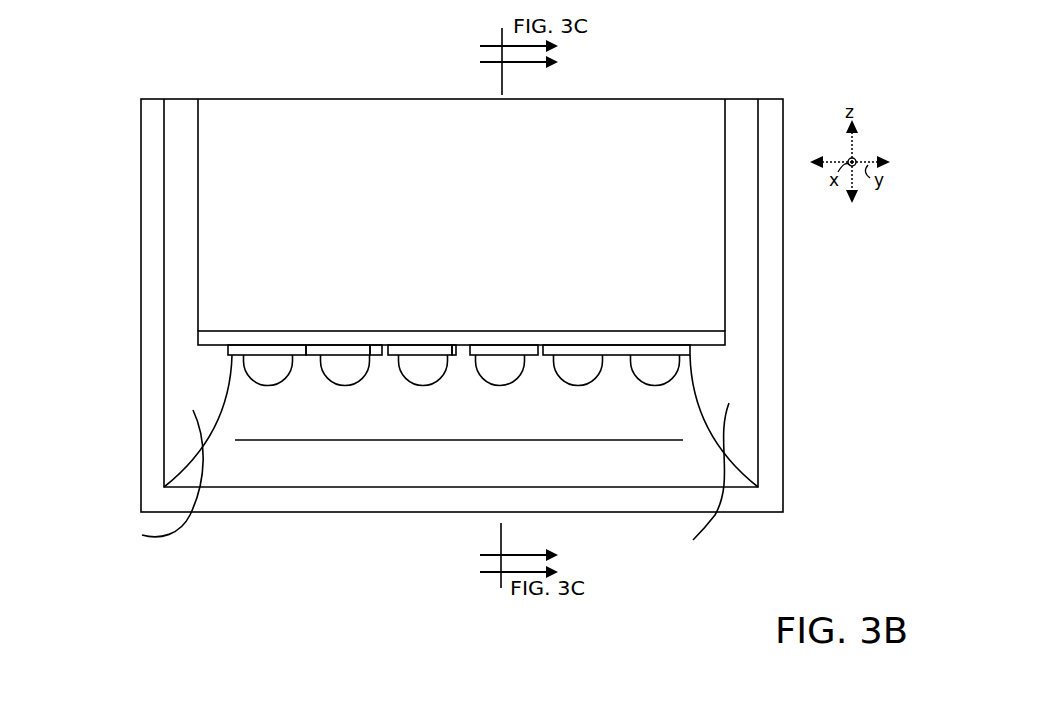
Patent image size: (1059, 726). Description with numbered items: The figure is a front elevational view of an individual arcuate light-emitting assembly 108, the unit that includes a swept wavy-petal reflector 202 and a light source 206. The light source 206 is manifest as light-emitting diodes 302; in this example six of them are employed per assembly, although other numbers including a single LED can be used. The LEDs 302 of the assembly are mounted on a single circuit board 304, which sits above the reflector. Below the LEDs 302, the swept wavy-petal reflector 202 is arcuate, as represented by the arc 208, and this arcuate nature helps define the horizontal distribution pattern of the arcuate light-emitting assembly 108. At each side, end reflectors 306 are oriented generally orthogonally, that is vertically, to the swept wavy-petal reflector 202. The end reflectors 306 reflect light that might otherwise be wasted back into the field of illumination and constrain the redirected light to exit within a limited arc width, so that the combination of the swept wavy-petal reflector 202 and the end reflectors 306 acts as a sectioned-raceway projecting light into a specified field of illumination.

The arcuate light-emitting assembly 108 is at (173, 99).
The light source 206 is at (577, 341).
The light-emitting diodes 302 is at (277, 357).
The circuit board 304 is at (496, 331).
The swept wavy-petal reflector 202 is at (393, 473).
The arc 208 is at (425, 440).
The end reflectors 306 is at (395, 507).